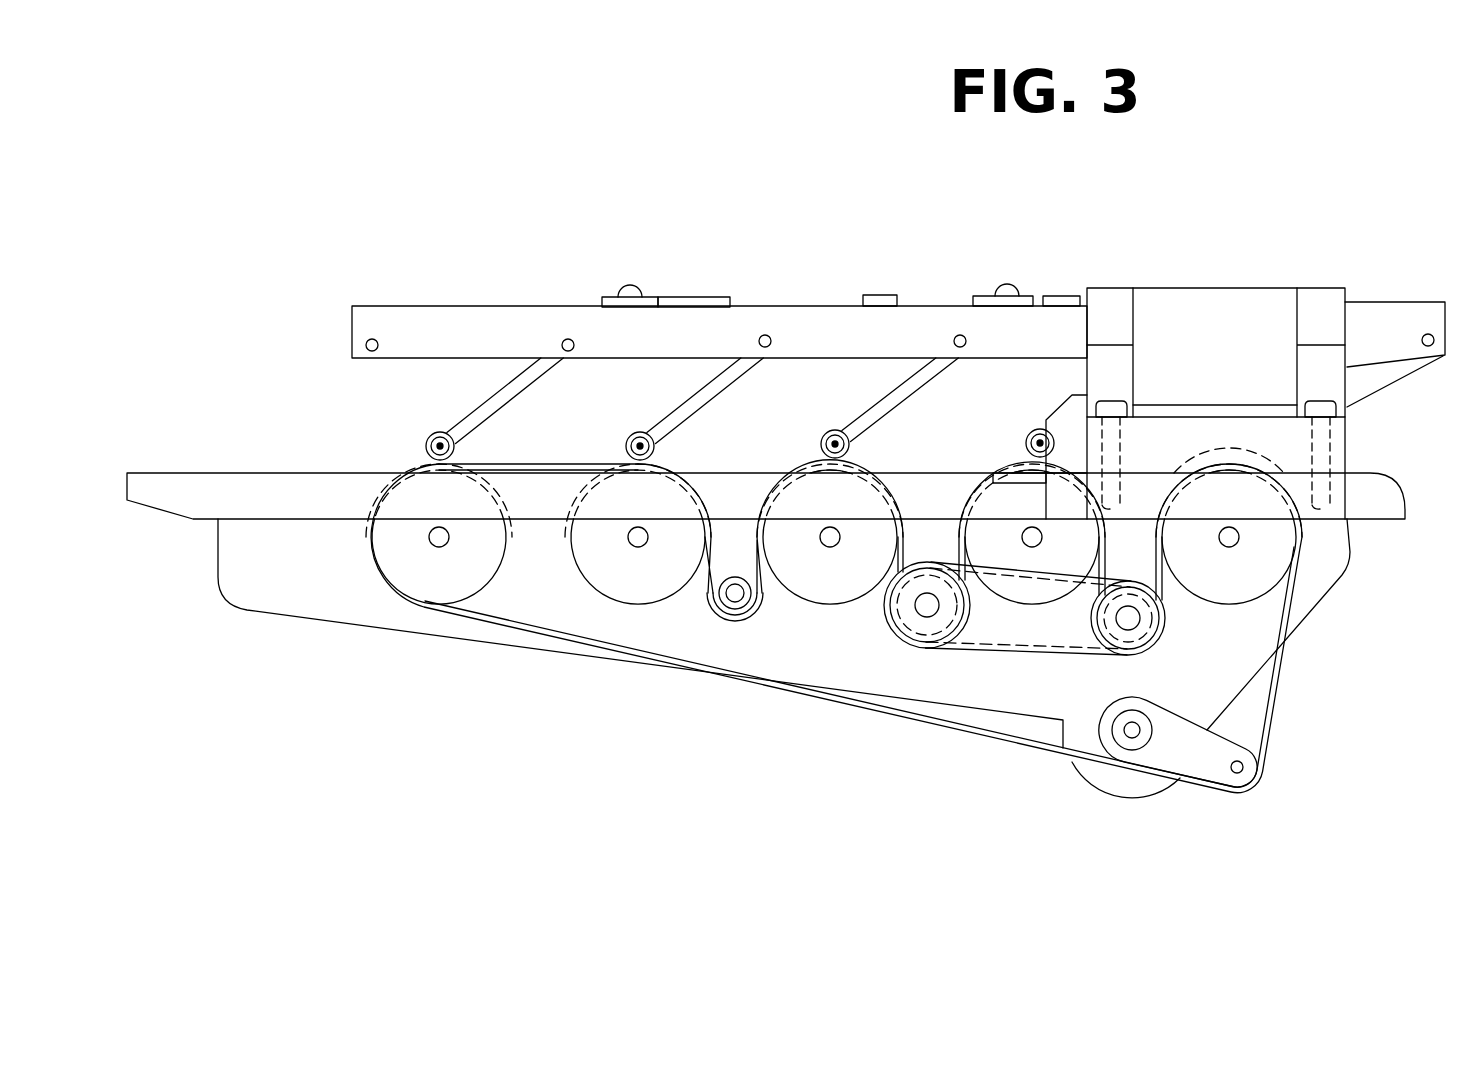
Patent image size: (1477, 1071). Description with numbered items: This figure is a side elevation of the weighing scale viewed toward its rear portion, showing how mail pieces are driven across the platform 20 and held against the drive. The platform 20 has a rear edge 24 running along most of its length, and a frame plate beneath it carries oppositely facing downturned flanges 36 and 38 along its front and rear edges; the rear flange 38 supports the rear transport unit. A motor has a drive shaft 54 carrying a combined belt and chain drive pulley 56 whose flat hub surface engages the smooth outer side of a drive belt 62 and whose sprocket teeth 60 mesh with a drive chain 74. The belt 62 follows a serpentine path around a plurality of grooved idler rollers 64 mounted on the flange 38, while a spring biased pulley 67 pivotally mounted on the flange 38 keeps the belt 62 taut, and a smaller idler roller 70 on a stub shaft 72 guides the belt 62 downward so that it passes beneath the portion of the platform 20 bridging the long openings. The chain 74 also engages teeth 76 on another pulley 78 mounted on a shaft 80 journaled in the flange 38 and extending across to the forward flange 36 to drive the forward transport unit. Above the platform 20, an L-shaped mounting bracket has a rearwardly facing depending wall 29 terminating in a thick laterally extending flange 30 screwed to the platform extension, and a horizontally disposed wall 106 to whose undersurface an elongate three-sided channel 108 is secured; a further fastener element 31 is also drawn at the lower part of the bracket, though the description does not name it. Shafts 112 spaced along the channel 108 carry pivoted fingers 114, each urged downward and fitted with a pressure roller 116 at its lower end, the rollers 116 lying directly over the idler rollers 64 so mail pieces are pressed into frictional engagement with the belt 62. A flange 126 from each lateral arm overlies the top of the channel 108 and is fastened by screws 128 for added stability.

The platform 20 is at (266, 472).
The rear edge 24 is at (1162, 490).
The depending wall 29 is at (1186, 306).
The flange 30 is at (1340, 441).
The bolt 31 is at (1134, 404).
The forward downturned flange 36 is at (1064, 410).
The rear downturned flange 38 is at (344, 604).
The drive shaft 54 is at (1120, 622).
The combined belt and chain drive pulley 56 is at (1142, 651).
The sprocket teeth 60 is at (1166, 631).
The drive belt 62 is at (556, 465).
The idler rollers 64 is at (582, 546).
The spring biased pulley 67 is at (1266, 742).
The smaller idler roller 70 is at (753, 616).
The stub shaft 72 is at (726, 598).
The drive chain 74 is at (1056, 656).
The teeth 76 is at (904, 626).
The pulley 78 is at (976, 627).
The shaft 80 is at (930, 640).
The horizontally disposed wall 106 is at (1266, 289).
The channel 108 is at (484, 305).
The shafts 112 is at (378, 339).
The finger 114 is at (480, 404).
The pressure roller 116 is at (427, 441).
The flange 126 is at (702, 296).
The screws 128 is at (632, 292).